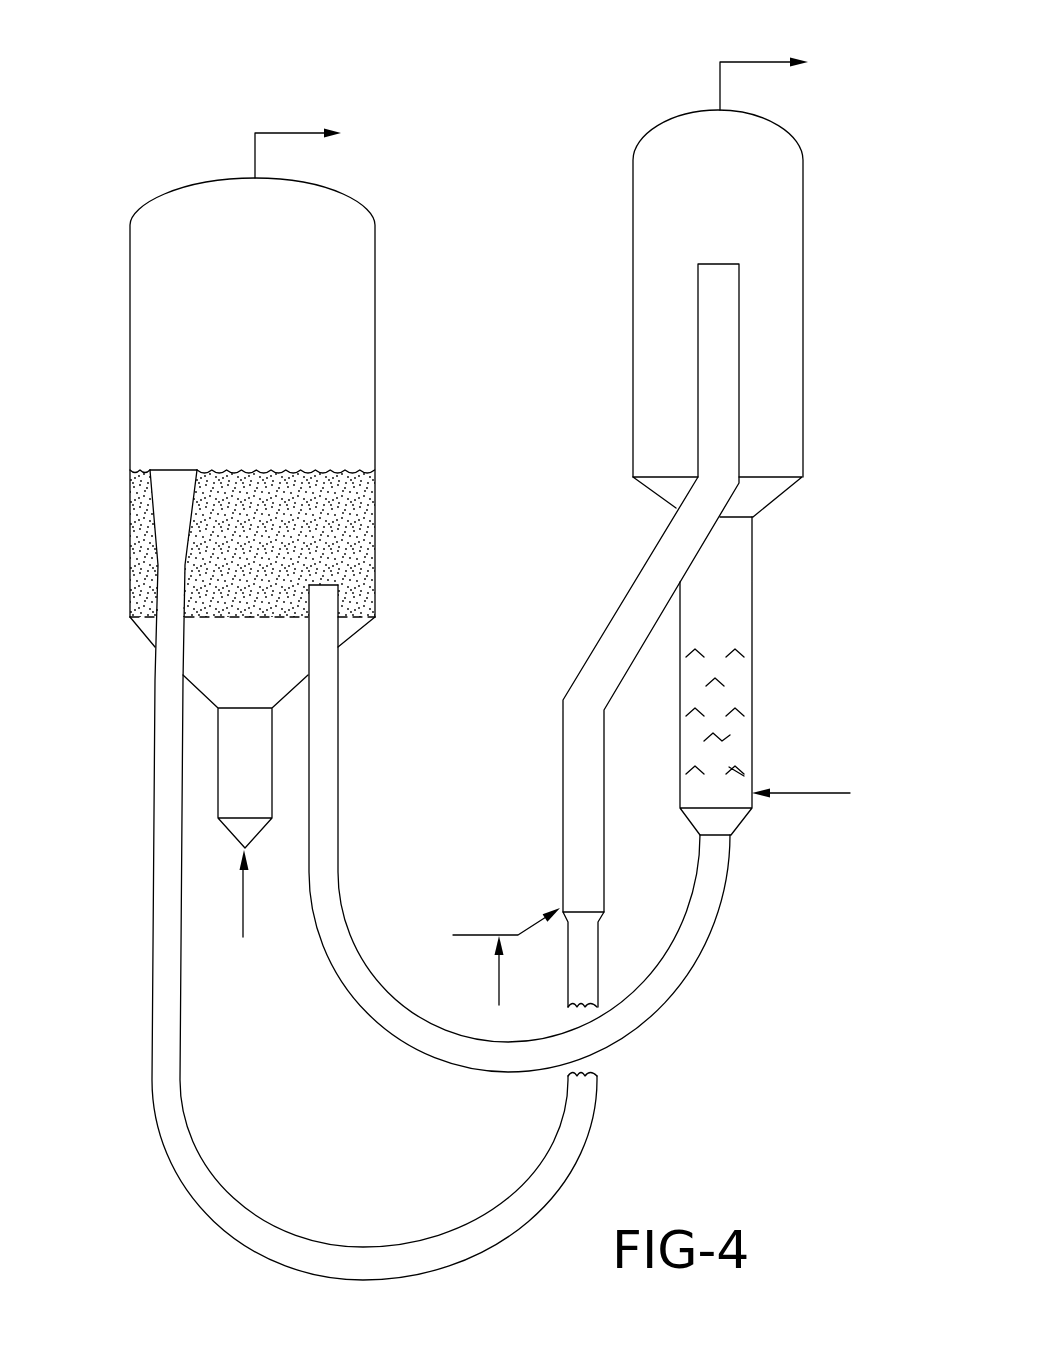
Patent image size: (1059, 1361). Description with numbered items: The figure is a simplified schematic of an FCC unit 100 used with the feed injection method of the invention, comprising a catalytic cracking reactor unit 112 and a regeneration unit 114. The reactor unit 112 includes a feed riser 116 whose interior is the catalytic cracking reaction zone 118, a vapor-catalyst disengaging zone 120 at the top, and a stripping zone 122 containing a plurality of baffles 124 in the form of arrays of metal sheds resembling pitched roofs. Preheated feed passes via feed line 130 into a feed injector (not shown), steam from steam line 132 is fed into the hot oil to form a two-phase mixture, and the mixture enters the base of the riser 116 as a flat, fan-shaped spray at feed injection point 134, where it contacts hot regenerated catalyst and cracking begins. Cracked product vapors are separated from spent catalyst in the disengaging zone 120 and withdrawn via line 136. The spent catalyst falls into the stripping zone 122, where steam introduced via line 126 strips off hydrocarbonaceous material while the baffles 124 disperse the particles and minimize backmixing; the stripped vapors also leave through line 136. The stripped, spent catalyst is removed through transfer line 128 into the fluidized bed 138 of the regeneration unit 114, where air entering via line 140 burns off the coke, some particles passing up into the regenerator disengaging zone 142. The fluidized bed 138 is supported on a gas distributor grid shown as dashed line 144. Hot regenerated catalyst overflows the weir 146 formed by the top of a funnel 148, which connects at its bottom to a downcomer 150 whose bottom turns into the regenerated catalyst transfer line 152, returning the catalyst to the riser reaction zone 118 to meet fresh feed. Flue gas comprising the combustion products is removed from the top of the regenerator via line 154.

The FCC unit 100 is at (158, 106).
The catalytic cracking reactor unit 112 is at (804, 200).
The regeneration unit 114 is at (376, 274).
The feed riser 116 is at (563, 740).
The catalytic cracking reaction zone 118 is at (583, 797).
The vapor-catalyst disengaging zone 120 is at (742, 224).
The stripping zone 122 is at (733, 667).
The baffles 124 is at (735, 763).
The line 126 is at (813, 795).
The transfer line 128 is at (339, 735).
The feed line 130 is at (481, 934).
The steam line 132 is at (499, 990).
The feed injection point 134 is at (560, 906).
The line 136 is at (755, 62).
The fluidized bed 138 is at (335, 548).
The line 140 is at (243, 903).
The disengaging zone 142 is at (274, 369).
The gas distributor grid 144 is at (252, 624).
The weir 146 is at (185, 468).
The funnel 148 is at (158, 503).
The downcomer 150 is at (160, 585).
The regenerated catalyst transfer line 152 is at (357, 1246).
The line 154 is at (290, 133).